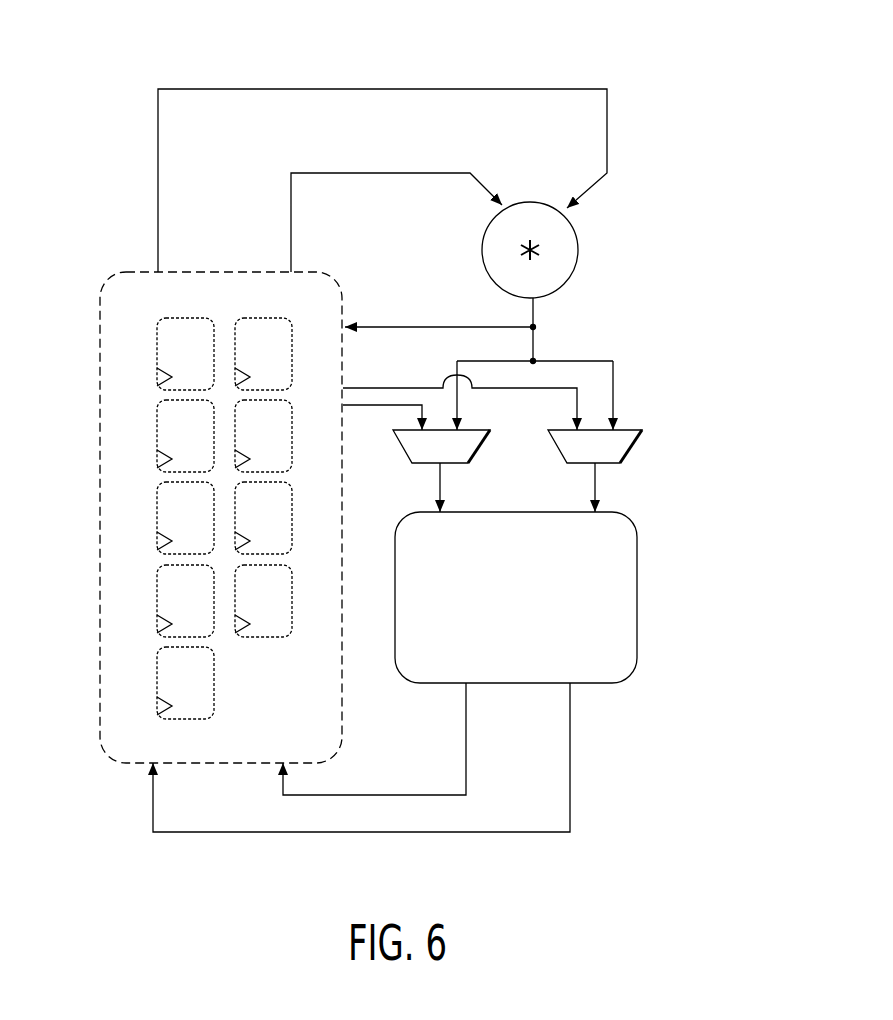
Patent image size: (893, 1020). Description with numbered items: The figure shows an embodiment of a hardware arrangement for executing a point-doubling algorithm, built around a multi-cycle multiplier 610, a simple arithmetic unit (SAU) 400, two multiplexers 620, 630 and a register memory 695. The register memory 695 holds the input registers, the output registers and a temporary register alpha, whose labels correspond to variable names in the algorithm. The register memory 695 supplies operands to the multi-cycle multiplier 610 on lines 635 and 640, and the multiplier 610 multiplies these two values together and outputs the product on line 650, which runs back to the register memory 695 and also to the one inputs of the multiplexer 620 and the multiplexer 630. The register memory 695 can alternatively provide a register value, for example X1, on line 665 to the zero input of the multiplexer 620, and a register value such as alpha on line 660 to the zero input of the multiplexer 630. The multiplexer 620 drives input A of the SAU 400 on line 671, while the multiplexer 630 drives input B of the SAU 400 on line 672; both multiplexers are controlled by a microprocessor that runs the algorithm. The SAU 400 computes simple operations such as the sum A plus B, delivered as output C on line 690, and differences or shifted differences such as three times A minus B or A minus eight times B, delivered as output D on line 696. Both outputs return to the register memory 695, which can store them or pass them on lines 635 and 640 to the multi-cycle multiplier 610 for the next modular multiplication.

The simple arithmetic unit 400 is at (628, 597).
The multi-cycle multiplier 610 is at (578, 270).
The multiplexer 620 is at (484, 430).
The multiplexer 630 is at (643, 428).
The line 635 is at (492, 89).
The line 640 is at (313, 173).
The line 650 is at (427, 326).
The line 660 is at (420, 388).
The line 665 is at (370, 408).
The line 671 is at (442, 478).
The line 672 is at (597, 480).
The line 690 is at (464, 742).
The register memory 695 is at (112, 272).
The line 696 is at (572, 748).